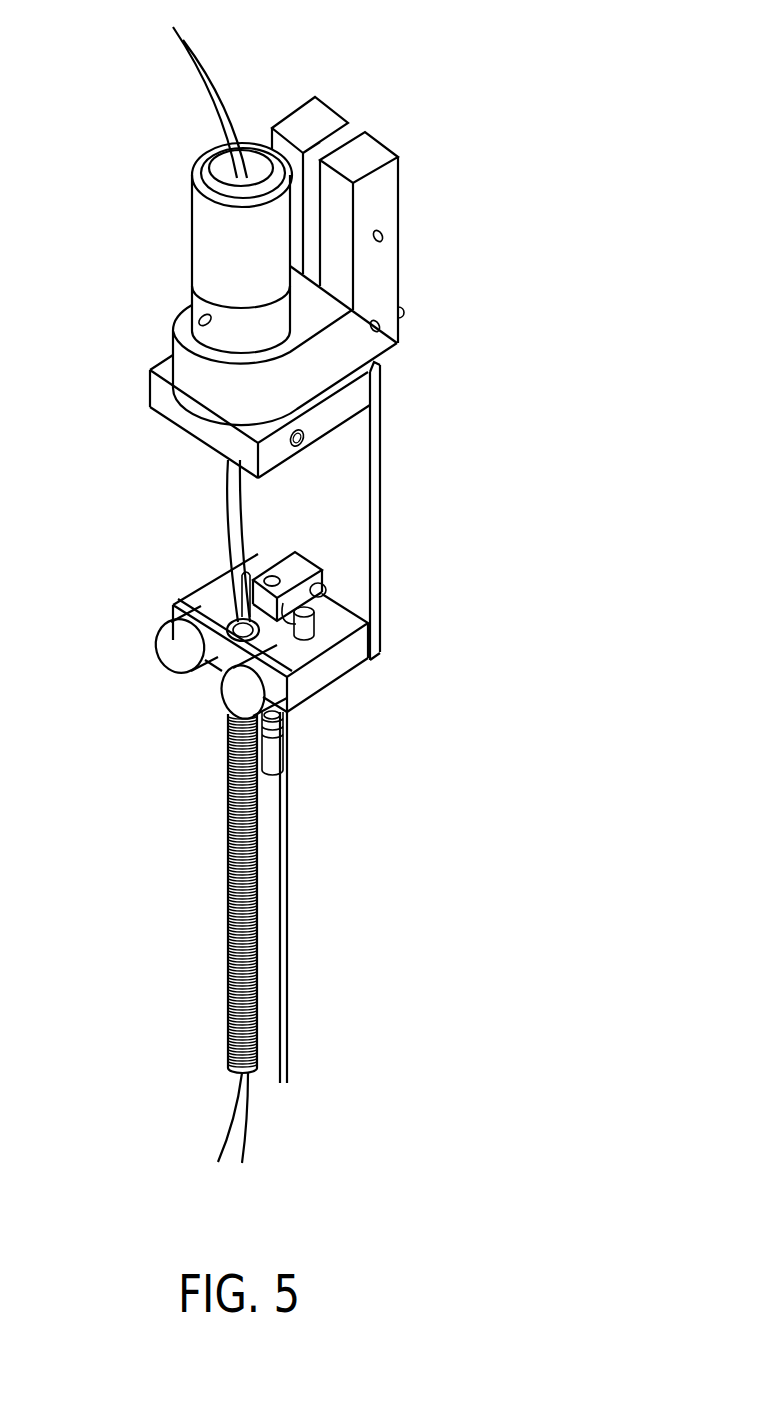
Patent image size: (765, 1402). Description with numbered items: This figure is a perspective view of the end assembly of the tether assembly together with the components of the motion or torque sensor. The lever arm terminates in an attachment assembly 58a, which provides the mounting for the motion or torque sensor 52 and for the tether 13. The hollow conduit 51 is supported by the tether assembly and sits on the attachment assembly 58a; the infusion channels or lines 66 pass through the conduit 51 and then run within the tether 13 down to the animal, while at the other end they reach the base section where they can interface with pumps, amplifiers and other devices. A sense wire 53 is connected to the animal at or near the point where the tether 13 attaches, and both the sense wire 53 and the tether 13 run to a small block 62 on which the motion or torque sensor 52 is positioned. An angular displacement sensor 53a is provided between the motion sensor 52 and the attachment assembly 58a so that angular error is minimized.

The tether 13 is at (226, 786).
The hollow conduit 51 is at (188, 175).
The motion or torque sensor 52 is at (328, 606).
The sense wire 53 is at (301, 812).
The angular displacement sensor 53a is at (378, 402).
The attachment assembly 58a is at (397, 248).
The small block 62 is at (343, 675).
The infusion channels or lines 66 is at (208, 54).